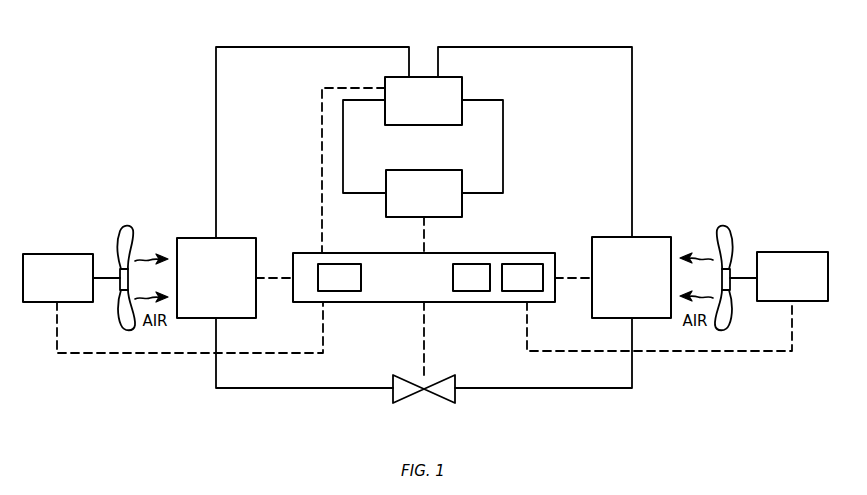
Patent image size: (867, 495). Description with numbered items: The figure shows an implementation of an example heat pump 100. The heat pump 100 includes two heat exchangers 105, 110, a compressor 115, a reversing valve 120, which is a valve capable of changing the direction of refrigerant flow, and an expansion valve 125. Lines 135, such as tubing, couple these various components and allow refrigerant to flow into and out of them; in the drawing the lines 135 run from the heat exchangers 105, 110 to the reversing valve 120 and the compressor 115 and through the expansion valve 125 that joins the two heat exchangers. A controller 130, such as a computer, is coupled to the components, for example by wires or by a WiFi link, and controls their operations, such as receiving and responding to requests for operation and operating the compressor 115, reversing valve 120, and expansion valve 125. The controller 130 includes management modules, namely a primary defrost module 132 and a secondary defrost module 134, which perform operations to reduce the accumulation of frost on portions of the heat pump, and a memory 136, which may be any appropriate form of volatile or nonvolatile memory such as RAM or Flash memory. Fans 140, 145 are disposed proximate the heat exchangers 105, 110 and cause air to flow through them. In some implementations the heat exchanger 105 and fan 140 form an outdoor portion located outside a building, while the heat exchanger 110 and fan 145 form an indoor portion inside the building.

The heat pump 100 is at (145, 55).
The heat exchanger 105 is at (216, 278).
The heat exchanger 110 is at (631, 277).
The compressor 115 is at (424, 193).
The reversing valve 120 is at (423, 101).
The expansion valve 125 is at (445, 395).
The controller 130 is at (424, 277).
The primary defrost module 132 is at (339, 277).
The secondary defrost module 134 is at (471, 277).
The memory 136 is at (522, 277).
The lines 135 is at (312, 47).
The fan 140 is at (79, 278).
The fan 145 is at (771, 278).